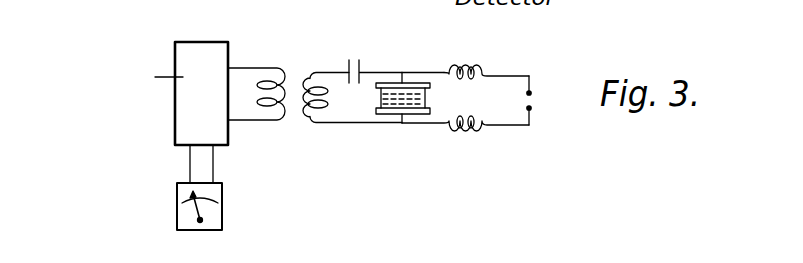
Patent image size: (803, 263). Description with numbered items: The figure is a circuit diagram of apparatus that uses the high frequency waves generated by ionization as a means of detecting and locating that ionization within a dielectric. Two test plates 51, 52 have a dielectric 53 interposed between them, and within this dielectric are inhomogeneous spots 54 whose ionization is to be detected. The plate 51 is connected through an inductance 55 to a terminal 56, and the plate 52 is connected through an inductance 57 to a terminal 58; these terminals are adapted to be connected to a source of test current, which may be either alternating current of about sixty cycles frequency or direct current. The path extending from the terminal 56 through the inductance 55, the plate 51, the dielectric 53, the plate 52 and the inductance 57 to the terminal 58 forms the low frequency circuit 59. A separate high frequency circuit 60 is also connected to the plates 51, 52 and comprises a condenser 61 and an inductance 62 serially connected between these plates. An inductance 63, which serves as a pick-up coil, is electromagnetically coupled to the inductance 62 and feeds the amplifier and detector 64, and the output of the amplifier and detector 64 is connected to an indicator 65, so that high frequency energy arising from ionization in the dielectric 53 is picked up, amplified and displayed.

The test plate 51 is at (424, 82).
The test plate 52 is at (429, 114).
The dielectric 53 is at (427, 95).
The inhomogeneous spots 54 is at (411, 98).
The inductance 55 is at (470, 61).
The terminal 56 is at (531, 92).
The inductance 57 is at (464, 134).
The terminal 58 is at (531, 108).
The low frequency circuit 59 is at (523, 85).
The high frequency circuit 60 is at (383, 55).
The condenser 61 is at (358, 53).
The inductance 62 is at (330, 103).
The inductance 63 is at (258, 83).
The amplifier and detector 64 is at (200, 52).
The indicator 65 is at (208, 213).